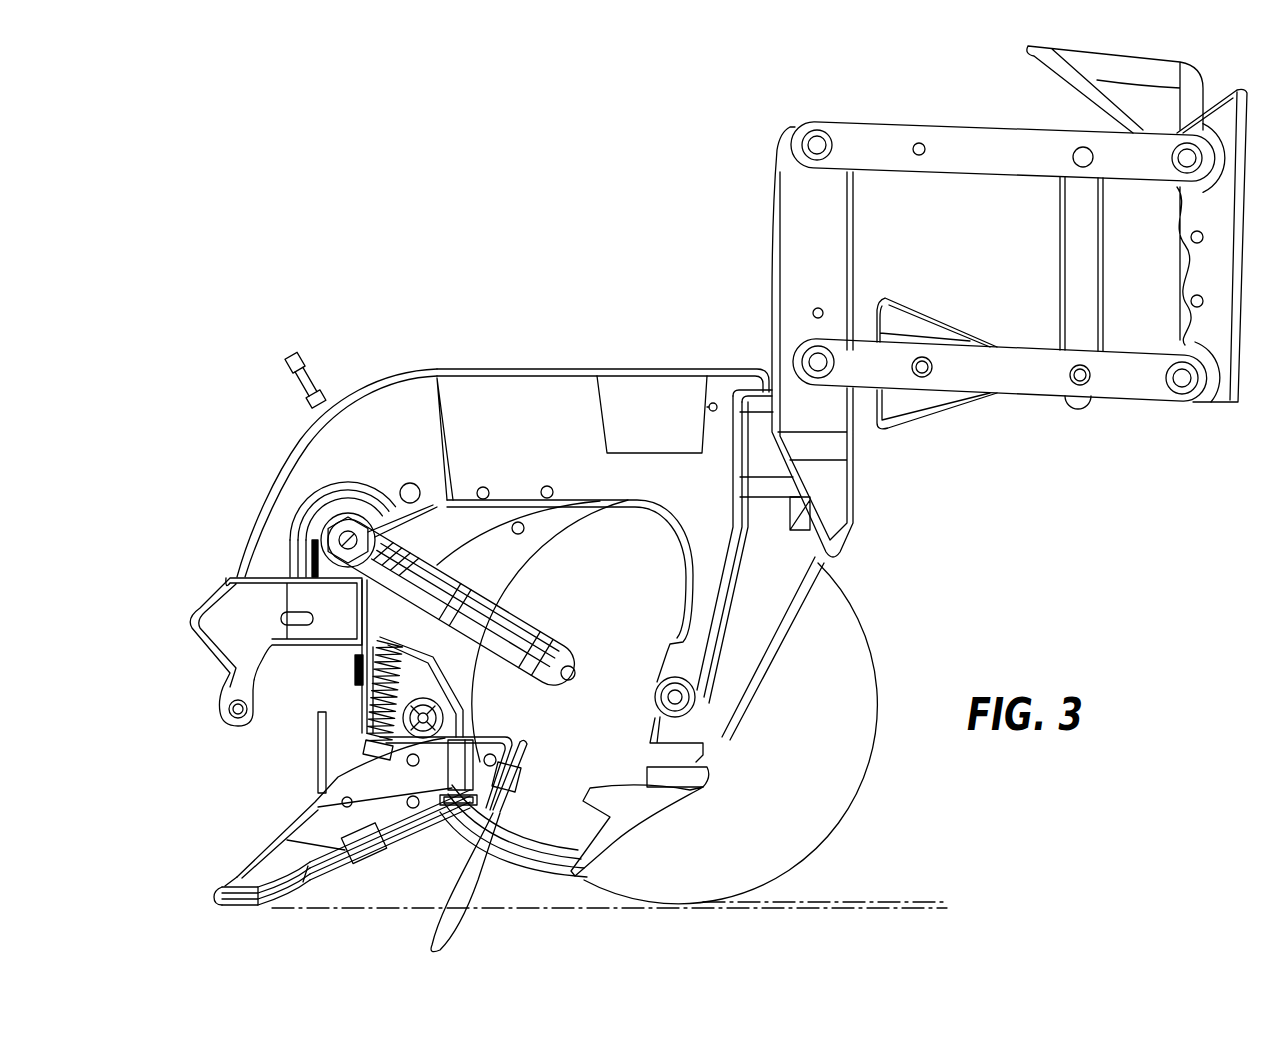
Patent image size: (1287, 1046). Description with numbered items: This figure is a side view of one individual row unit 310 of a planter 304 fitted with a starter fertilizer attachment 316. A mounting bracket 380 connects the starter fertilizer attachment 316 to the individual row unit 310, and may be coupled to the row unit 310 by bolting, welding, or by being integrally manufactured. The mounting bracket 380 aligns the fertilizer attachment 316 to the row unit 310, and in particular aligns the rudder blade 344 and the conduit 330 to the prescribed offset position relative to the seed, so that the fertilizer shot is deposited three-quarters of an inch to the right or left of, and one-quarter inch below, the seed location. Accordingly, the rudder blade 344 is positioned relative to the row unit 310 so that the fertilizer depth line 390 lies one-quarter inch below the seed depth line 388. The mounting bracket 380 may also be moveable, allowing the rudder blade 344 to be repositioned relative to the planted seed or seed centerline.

The individual row unit 310 is at (912, 565).
The mounting bracket 380 is at (343, 619).
The conduit 330 is at (318, 744).
The starter fertilizer attachment 316 is at (258, 797).
The rudder blade 344 is at (282, 873).
The planter 304 is at (372, 883).
The seed depth line 388 is at (850, 902).
The fertilizer depth line 390 is at (865, 912).